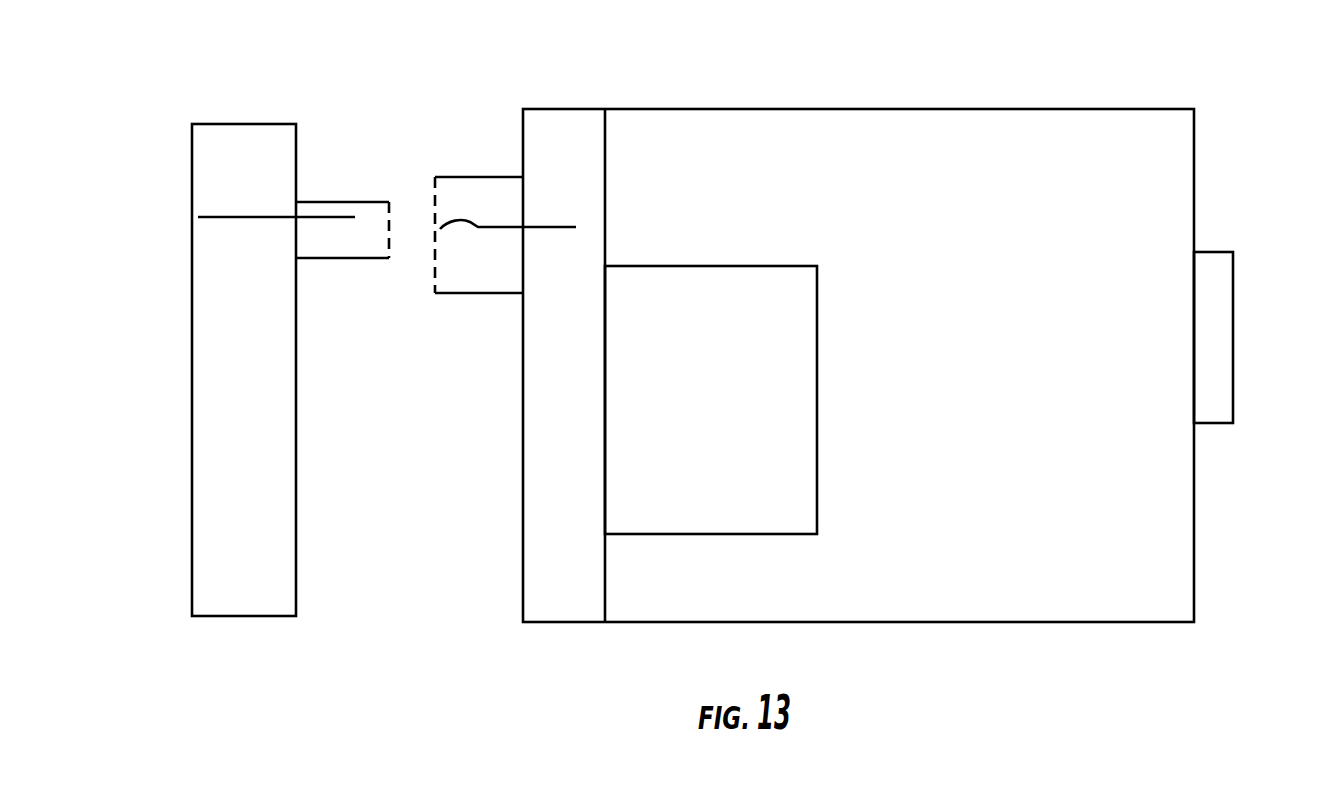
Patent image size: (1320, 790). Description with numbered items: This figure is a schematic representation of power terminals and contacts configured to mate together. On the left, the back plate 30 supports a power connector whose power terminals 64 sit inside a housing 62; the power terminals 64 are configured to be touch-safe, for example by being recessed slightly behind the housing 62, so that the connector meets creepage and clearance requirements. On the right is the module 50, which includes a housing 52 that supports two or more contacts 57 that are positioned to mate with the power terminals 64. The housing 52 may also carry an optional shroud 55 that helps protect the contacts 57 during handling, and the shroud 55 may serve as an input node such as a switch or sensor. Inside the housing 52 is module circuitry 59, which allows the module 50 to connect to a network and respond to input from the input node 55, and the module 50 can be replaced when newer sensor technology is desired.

The back plate 30 is at (192, 405).
The housing 62 is at (349, 202).
The power terminals 64 is at (248, 219).
The shroud 55 is at (465, 177).
The contacts 57 is at (502, 226).
The housing 52 is at (820, 109).
The module circuitry 59 is at (751, 534).
The module 50 is at (1218, 560).